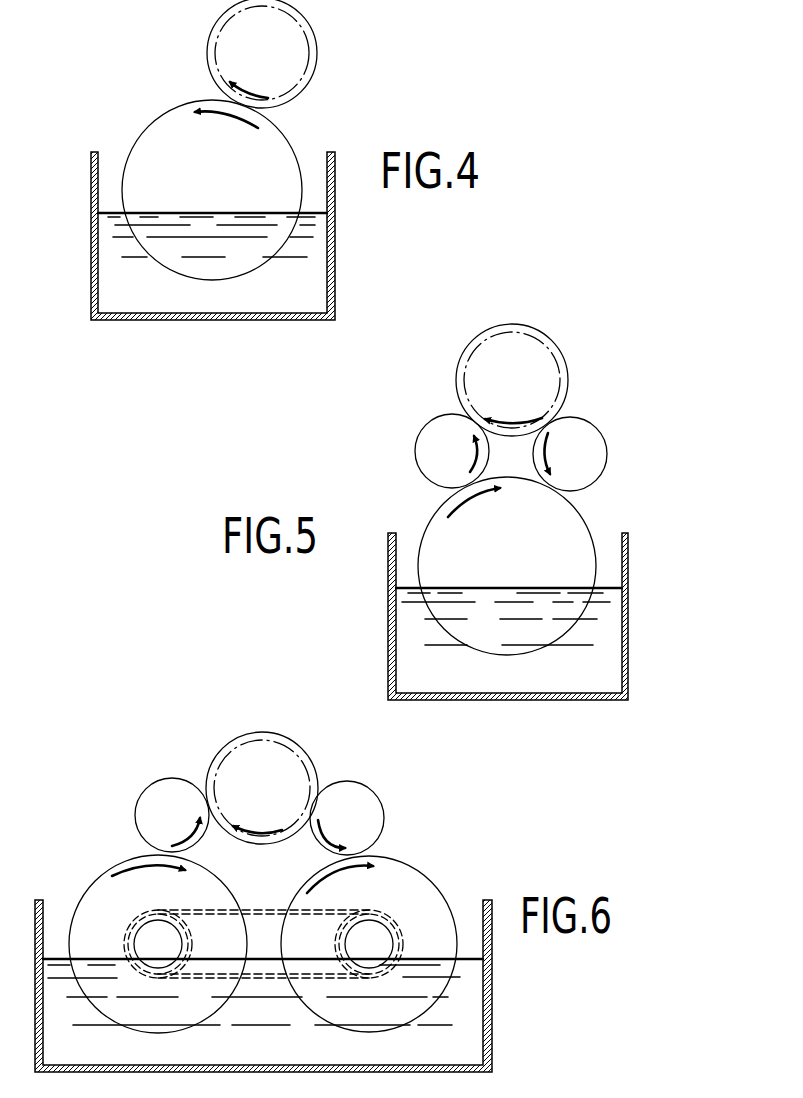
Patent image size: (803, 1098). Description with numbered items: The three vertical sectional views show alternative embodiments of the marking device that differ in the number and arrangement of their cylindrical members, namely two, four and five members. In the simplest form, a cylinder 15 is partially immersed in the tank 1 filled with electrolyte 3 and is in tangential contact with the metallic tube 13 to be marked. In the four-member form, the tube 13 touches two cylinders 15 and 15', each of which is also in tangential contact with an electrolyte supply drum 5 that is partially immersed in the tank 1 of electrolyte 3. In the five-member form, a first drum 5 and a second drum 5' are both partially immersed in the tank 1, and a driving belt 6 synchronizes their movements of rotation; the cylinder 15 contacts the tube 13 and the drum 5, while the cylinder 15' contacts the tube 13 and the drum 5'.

In FIG. 4, the tank 1 is at (335, 282).
In FIG. 5, the tank 1 is at (392, 640).
In FIG. 6, the tank 1 is at (492, 1042).
In FIG. 4, the liquid bath 3 is at (259, 293).
In FIG. 5, the liquid bath 3 is at (400, 596).
In FIG. 6, the liquid bath 3 is at (483, 988).
In FIG. 5, the electrolyte supply drum 5 is at (488, 558).
In FIG. 6, the electrolyte supply drum 5 is at (155, 925).
In FIG. 6, the second drum 5' is at (372, 934).
In FIG. 6, the driving belt 6 is at (262, 910).
In FIG. 4, the metallic tube 13 is at (207, 42).
In FIG. 5, the metallic tube 13 is at (483, 334).
In FIG. 6, the metallic tube 13 is at (230, 738).
In FIG. 4, the cylinder 15 is at (209, 173).
In FIG. 5, the cylinder 15 is at (436, 435).
In FIG. 6, the cylinder 15 is at (157, 799).
In FIG. 5, the second cylinder 15' is at (586, 434).
In FIG. 6, the second cylinder 15' is at (347, 795).